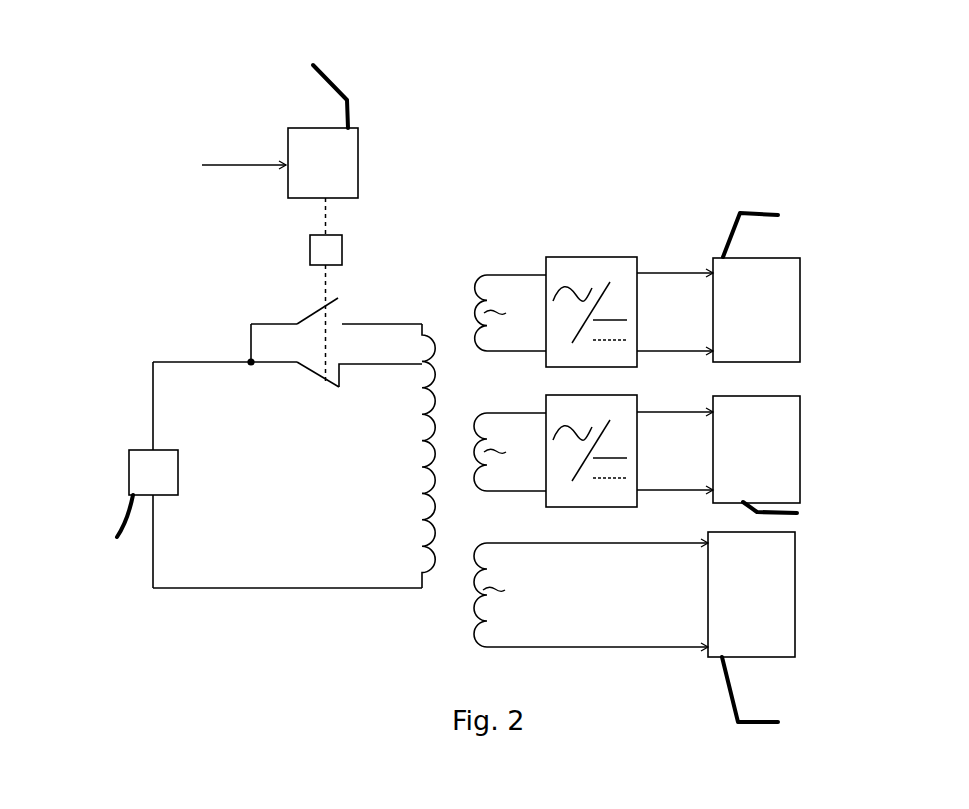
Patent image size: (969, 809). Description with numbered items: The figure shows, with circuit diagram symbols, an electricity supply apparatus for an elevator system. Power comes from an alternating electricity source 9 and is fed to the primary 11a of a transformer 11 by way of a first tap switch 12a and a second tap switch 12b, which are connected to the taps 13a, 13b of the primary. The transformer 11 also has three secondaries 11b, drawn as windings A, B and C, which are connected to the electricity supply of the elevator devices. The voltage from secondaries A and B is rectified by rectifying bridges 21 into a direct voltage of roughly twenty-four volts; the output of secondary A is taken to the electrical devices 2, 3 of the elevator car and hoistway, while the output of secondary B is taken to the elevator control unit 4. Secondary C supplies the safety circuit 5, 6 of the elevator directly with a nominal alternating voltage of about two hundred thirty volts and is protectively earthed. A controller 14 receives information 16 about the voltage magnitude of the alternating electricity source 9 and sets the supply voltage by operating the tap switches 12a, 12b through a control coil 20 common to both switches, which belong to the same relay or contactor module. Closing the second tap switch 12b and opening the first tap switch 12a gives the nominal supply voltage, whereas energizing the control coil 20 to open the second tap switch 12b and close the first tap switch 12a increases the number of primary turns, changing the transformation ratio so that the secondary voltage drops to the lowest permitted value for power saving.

The electrical devices of the elevator car 2 is at (779, 287).
The electrical devices of the elevator hoistway 3 is at (779, 318).
The elevator control unit 4 is at (765, 462).
The safety circuit 5 is at (776, 636).
The safety circuit 6 is at (773, 611).
The alternating electricity source 9 is at (163, 486).
The transformer 11 is at (461, 252).
The primary 11a is at (418, 468).
The secondaries 11b is at (481, 257).
The first tap switch 12a is at (315, 306).
The second tap switch 12b is at (317, 377).
The tap 13a is at (380, 323).
The tap 13b is at (377, 365).
The controller 14 is at (337, 177).
The information about the voltage magnitude 16 is at (240, 166).
The control coil 20 is at (343, 250).
The rectifying bridges 21 is at (592, 257).